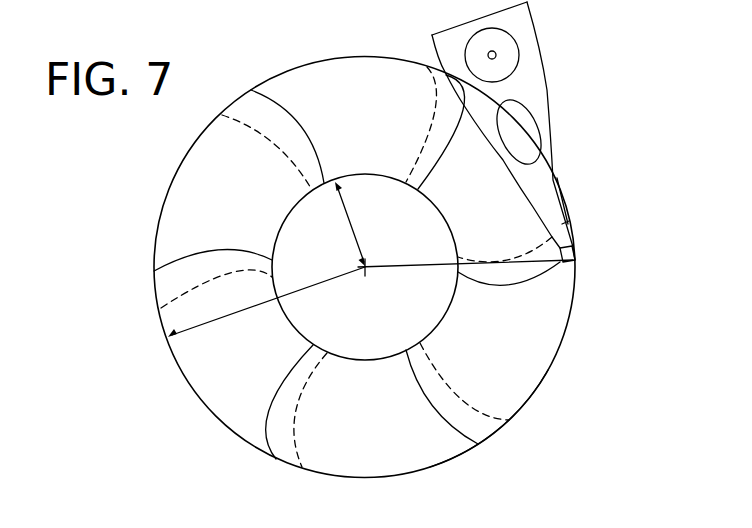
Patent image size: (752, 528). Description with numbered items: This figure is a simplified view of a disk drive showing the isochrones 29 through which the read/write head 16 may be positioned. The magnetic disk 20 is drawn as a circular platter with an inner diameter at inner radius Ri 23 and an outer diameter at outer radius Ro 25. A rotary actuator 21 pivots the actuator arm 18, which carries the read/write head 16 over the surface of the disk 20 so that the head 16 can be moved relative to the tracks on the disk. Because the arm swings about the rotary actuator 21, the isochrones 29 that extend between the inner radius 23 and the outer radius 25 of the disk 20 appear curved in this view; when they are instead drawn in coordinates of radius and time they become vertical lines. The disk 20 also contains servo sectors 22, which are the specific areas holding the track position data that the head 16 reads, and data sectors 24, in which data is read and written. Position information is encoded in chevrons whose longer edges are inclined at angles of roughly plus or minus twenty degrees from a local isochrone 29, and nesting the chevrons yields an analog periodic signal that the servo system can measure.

The read/write head 16 is at (575, 261).
The actuator arm 18 is at (547, 90).
The magnetic disk 20 is at (276, 71).
The rotary actuator 21 is at (496, 55).
The servo sectors 22 is at (153, 272).
The inner radius Ri 23 is at (358, 242).
The data sectors 24 is at (549, 371).
The outer radius Ro 25 is at (337, 281).
The isochrones 29 is at (535, 281).